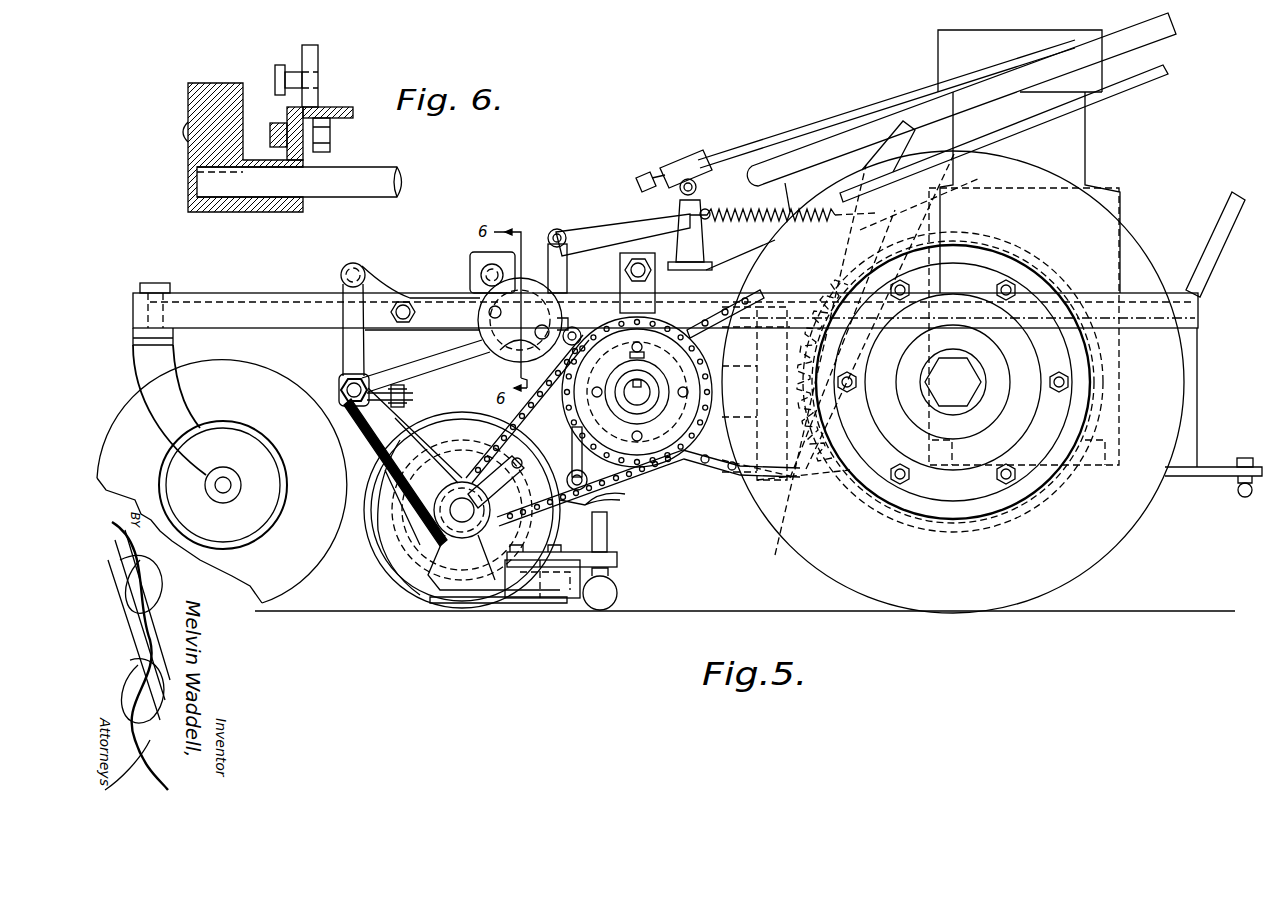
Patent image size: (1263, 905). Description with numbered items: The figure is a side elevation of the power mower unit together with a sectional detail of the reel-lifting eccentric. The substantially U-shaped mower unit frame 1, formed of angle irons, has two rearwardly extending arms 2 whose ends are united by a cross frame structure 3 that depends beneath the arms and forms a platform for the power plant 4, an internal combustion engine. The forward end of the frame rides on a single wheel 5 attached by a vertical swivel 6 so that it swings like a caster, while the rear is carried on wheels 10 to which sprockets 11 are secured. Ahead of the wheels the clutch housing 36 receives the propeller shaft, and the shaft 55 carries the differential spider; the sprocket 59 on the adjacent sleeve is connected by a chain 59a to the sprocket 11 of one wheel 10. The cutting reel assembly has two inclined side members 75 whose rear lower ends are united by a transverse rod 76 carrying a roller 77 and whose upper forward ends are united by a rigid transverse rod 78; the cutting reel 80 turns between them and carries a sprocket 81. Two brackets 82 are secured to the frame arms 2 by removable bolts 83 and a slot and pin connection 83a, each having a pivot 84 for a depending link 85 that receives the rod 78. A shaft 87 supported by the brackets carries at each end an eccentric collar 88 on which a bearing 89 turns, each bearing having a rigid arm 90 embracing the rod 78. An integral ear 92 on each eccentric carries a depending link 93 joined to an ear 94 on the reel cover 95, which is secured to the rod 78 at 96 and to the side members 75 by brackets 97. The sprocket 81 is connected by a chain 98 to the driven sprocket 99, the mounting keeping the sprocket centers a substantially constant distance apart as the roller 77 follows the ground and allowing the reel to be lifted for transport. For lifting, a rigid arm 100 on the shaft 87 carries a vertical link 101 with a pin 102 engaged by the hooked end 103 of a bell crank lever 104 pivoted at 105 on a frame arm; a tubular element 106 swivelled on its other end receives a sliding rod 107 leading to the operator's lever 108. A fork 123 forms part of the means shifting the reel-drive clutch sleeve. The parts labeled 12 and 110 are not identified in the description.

In FIG. 5, the mower unit frame 1 is at (200, 293).
In FIG. 6, the arms 2 is at (348, 108).
In FIG. 5, the cross frame structure 3 is at (1210, 465).
In FIG. 5, the power plant 4 is at (1080, 146).
In FIG. 5, the wheel 5 is at (300, 566).
In FIG. 5, the vertical swivel 6 is at (153, 286).
In FIG. 5, the wheels 10 is at (1105, 542).
In FIG. 5, the sprockets 11 is at (812, 480).
In FIG. 5, the caster 12 is at (1238, 490).
In FIG. 5, the clutch housing 36 is at (790, 520).
In FIG. 5, the shaft 55 is at (637, 395).
In FIG. 5, the sprocket 59 is at (722, 380).
In FIG. 5, the chain 59a is at (748, 500).
In FIG. 5, the side members 75 is at (388, 450).
In FIG. 5, the transverse rod 76 is at (612, 575).
In FIG. 5, the roller 77 is at (617, 594).
In FIG. 5, the rigid transverse rod 78 is at (340, 389).
In FIG. 5, the cutting reel 80 is at (390, 545).
In FIG. 5, the sprocket 81 is at (470, 536).
In FIG. 6, the brackets 82 is at (272, 128).
In FIG. 5, the brackets 82 is at (437, 296).
In FIG. 6, the removable bolts 83 is at (330, 135).
In FIG. 5, the removable bolts 83 is at (403, 302).
In FIG. 5, the slot and pin connection 83a is at (590, 300).
In FIG. 5, the pivot 84 is at (341, 276).
In FIG. 5, the depending link 85 is at (343, 349).
In FIG. 6, the shaft 87 is at (366, 170).
In FIG. 5, the shaft 87 is at (510, 352).
In FIG. 6, the eccentric collar 88 is at (240, 120).
In FIG. 5, the eccentric collar 88 is at (486, 305).
In FIG. 6, the bearing 89 is at (218, 83).
In FIG. 5, the arm 90 is at (446, 357).
In FIG. 5, the integral ear 92 is at (580, 328).
In FIG. 5, the depending link 93 is at (572, 458).
In FIG. 5, the ears 94 is at (612, 504).
In FIG. 5, the reel cover 95 is at (540, 430).
In FIG. 5, the cover securing point 96 is at (406, 393).
In FIG. 5, the brackets 97 is at (513, 480).
In FIG. 5, the chain 98 is at (490, 436).
In FIG. 5, the sprocket 99 is at (640, 480).
In FIG. 5, the rigid arm 100 is at (500, 384).
In FIG. 5, the link 101 is at (528, 284).
In FIG. 5, the pin 102 is at (560, 229).
In FIG. 5, the hooked end 103 is at (548, 238).
In FIG. 5, the bell crank lever 104 is at (610, 240).
In FIG. 5, the pivot 105 is at (700, 300).
In FIG. 5, the tubular element 106 is at (685, 165).
In FIG. 5, the rod 107 is at (757, 150).
In FIG. 5, the lever 108 is at (642, 180).
In FIG. 5, the spring 110 is at (748, 225).
In FIG. 5, the fork 123 is at (680, 248).